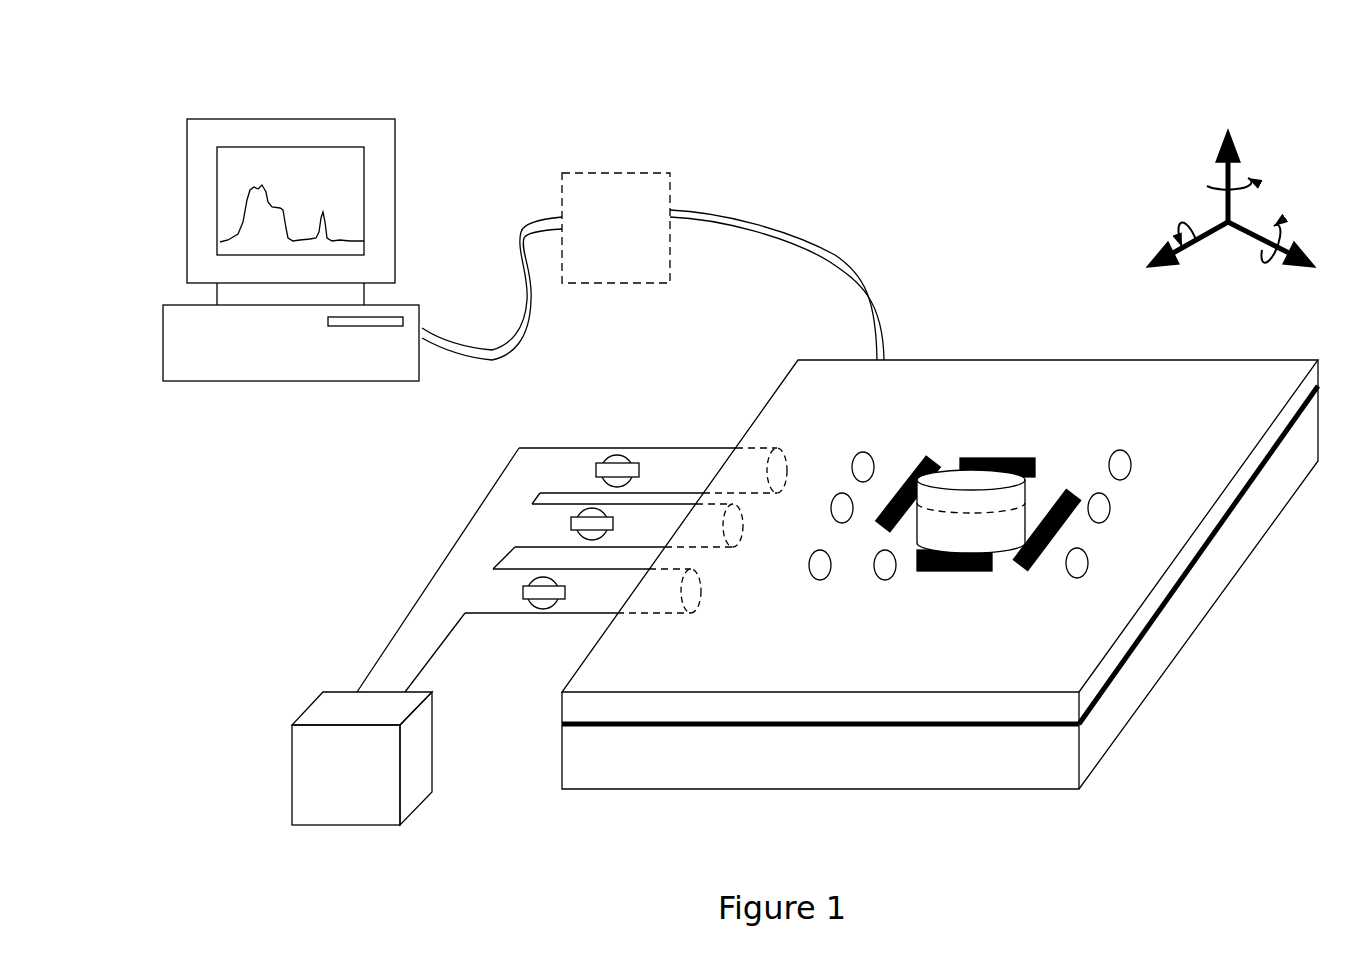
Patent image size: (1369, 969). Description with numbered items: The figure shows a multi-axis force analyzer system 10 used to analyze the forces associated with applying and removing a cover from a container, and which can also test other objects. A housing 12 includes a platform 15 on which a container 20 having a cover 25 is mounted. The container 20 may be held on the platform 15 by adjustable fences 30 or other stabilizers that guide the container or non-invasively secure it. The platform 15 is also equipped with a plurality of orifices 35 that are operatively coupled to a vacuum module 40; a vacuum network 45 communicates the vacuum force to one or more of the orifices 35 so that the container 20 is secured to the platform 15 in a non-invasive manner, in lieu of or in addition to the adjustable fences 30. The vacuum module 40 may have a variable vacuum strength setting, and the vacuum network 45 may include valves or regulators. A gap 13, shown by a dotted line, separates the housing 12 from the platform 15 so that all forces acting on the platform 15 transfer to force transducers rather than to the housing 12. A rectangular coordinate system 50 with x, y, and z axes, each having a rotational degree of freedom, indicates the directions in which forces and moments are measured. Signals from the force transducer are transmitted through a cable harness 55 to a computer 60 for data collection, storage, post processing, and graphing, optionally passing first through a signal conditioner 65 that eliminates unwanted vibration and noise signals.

The multi-axis force analyzer system 10 is at (940, 148).
The housing 12 is at (1095, 737).
The gap 13 is at (1104, 694).
The platform 15 is at (1104, 613).
The container 20 is at (1020, 513).
The cover 25 is at (941, 466).
The adjustable fences 30 is at (988, 575).
The orifices 35 is at (885, 585).
The vacuum module 40 is at (362, 758).
The vacuum network 45 is at (655, 627).
The rectangular coordinate system 50 is at (1232, 219).
The cable harness 55 is at (734, 214).
The computer 60 is at (291, 250).
The signal conditioner 65 is at (616, 228).